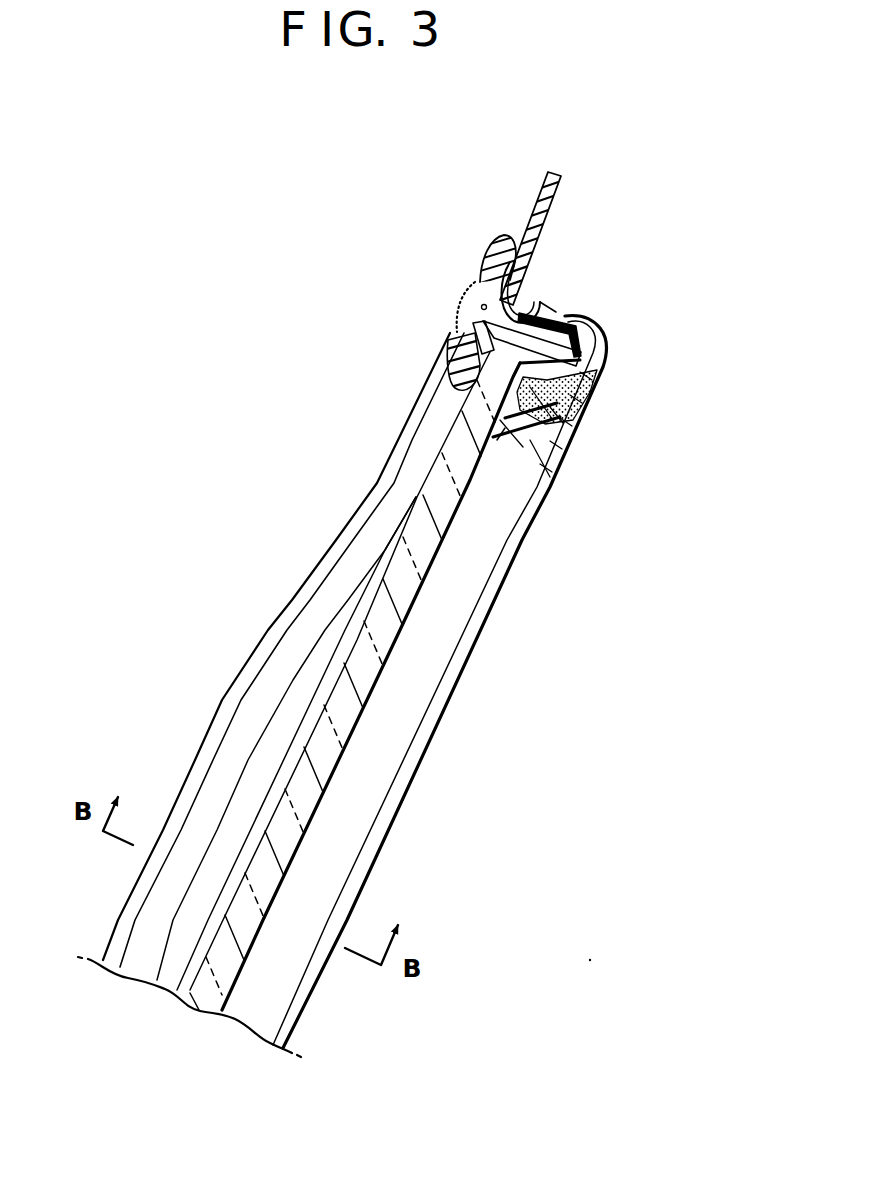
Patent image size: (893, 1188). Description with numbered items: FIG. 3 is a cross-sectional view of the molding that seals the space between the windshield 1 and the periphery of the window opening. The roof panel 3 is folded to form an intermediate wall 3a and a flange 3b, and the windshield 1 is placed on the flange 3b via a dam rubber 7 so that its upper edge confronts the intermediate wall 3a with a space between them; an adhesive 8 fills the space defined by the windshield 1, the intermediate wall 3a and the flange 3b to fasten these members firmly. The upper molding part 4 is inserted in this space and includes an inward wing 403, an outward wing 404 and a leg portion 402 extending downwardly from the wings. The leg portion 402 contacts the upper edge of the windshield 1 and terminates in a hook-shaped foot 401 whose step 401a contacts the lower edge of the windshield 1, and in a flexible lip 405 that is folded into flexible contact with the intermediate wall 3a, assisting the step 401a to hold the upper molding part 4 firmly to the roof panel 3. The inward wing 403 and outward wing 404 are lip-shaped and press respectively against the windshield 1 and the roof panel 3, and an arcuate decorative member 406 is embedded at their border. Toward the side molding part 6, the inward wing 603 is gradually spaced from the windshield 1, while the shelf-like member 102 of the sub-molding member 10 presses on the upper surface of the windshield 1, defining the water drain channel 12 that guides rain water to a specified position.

The windshield 1 is at (385, 633).
The roof panel 3 is at (534, 196).
The intermediate wall 3a is at (550, 306).
The flange 3b is at (567, 453).
The upper molding part 4 is at (394, 296).
The foot 401 is at (593, 390).
The step 401a is at (505, 430).
The leg portion 402 is at (514, 306).
The inward wing 403 is at (458, 362).
The outward wing 404 is at (492, 278).
The flexible lip 405 is at (576, 316).
The arcuate decorative member 406 is at (462, 314).
The side molding part 6 is at (124, 874).
The inward wing 603 is at (256, 720).
The dam rubber 7 is at (540, 487).
The adhesive 8 is at (567, 427).
The sub-molding member 10 is at (250, 801).
The shelf-like member 102 is at (204, 940).
The water drain channel 12 is at (163, 971).